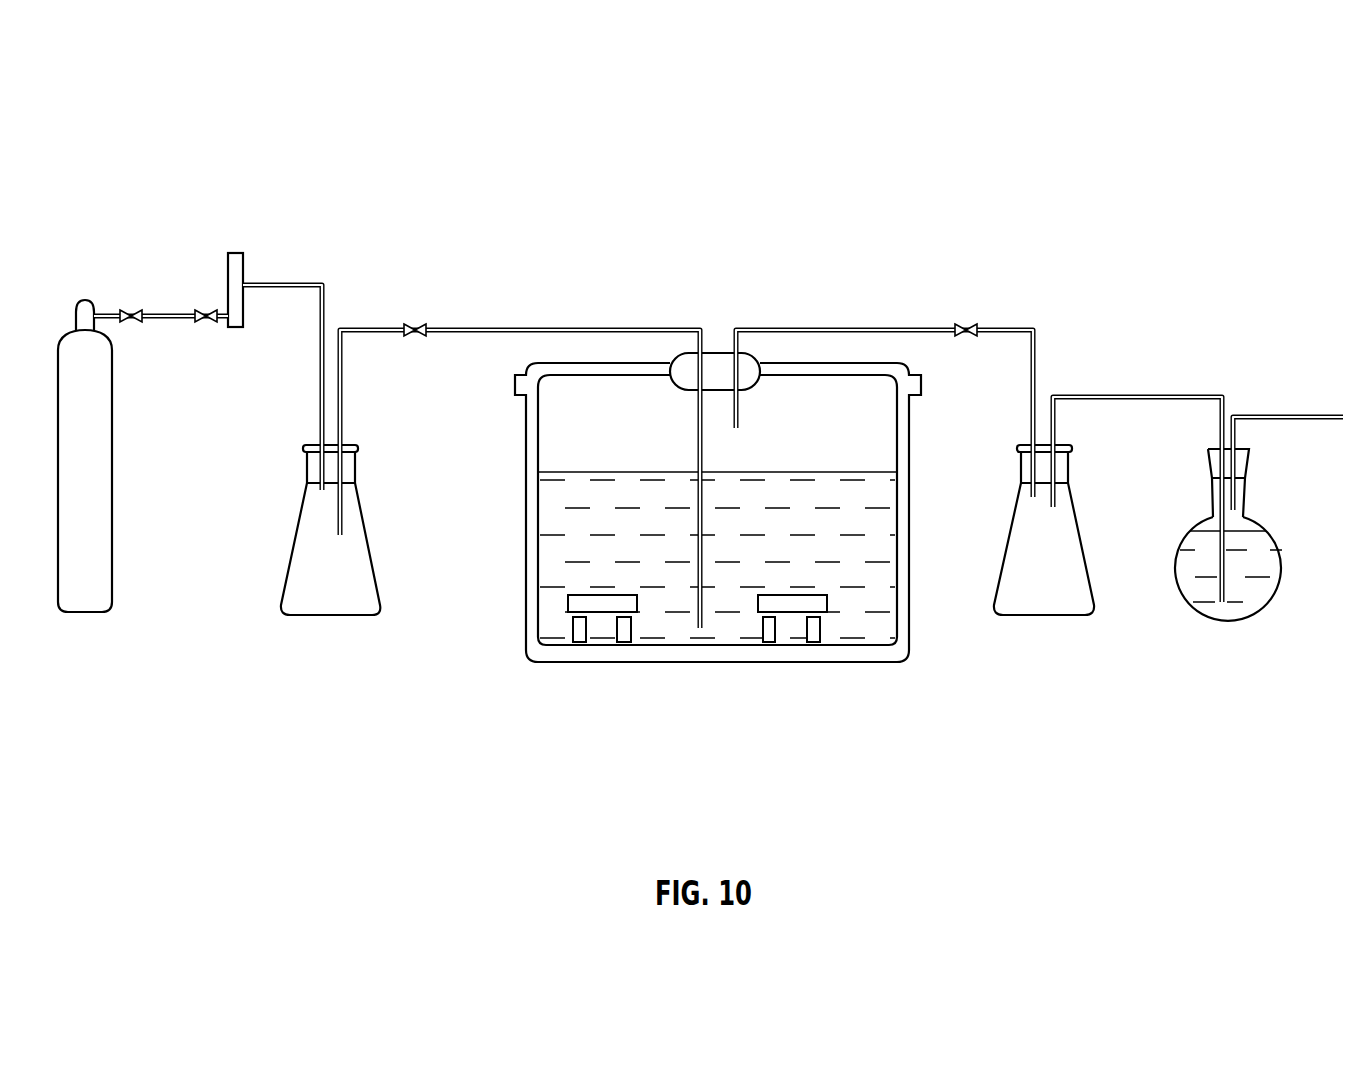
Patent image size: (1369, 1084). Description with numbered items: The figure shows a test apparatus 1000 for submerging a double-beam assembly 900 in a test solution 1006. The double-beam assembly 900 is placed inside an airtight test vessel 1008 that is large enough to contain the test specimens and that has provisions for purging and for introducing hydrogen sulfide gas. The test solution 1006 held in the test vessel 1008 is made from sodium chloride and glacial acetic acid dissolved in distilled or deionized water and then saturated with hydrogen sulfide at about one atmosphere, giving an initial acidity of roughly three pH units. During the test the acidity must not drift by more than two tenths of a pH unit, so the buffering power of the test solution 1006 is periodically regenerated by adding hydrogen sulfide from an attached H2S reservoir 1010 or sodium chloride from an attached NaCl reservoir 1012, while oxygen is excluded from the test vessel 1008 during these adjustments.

The test apparatus 1000 is at (1045, 127).
The test solution 1006 is at (641, 503).
The test vessel 1008 is at (495, 618).
The H2S reservoir 1010 is at (83, 583).
The NaCl reservoir 1012 is at (1228, 620).
The double-beam assembly 900 is at (788, 603).